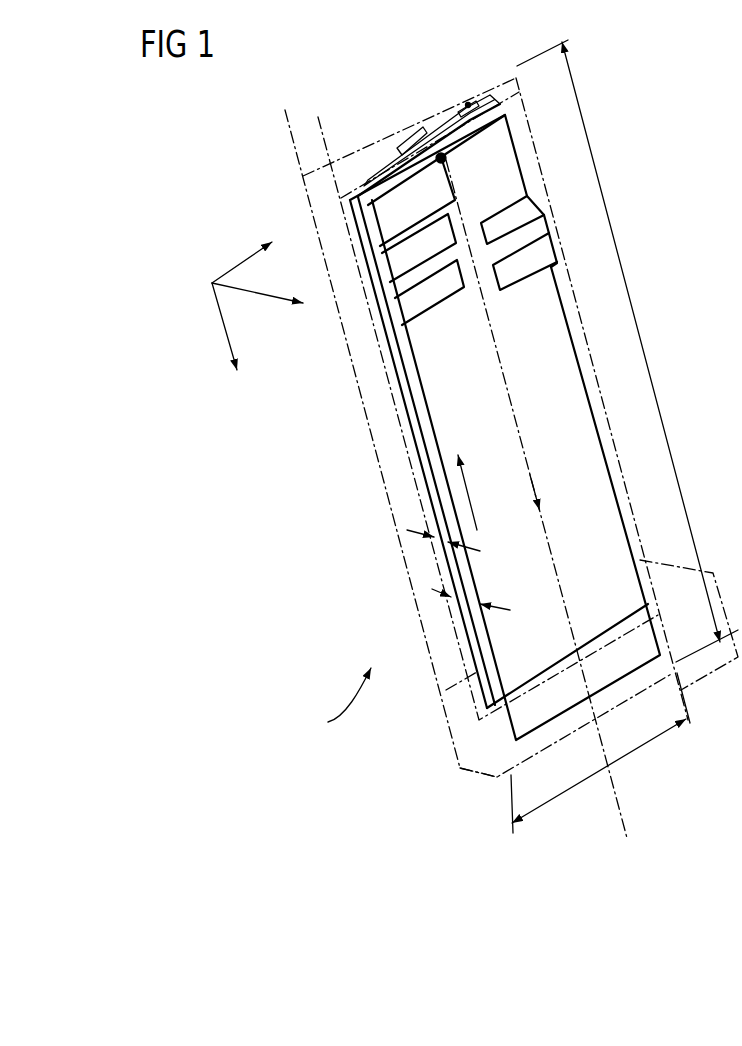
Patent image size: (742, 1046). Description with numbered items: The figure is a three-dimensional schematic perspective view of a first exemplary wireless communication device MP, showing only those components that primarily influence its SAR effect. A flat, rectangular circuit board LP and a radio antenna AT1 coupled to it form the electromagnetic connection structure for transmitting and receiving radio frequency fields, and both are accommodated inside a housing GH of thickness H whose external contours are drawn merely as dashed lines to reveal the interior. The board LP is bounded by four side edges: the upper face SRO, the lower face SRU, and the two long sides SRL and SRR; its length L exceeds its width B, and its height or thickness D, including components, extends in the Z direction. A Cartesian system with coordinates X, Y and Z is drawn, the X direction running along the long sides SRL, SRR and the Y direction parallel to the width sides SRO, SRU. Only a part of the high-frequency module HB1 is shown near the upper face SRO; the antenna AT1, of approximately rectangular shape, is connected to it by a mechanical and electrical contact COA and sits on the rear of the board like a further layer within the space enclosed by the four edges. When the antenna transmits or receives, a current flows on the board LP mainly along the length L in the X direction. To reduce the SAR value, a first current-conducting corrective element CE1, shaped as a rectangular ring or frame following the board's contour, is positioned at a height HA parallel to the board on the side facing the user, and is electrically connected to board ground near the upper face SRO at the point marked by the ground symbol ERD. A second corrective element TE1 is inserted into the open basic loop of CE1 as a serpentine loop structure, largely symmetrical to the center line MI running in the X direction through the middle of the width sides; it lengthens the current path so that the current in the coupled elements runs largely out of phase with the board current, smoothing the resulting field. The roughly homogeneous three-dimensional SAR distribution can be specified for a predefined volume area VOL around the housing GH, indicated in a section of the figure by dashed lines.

The housing thickness H is at (238, 97).
The housing GH is at (377, 137).
The high-frequency module HB1 is at (380, 128).
The ground symbol ERD is at (396, 158).
The mechanical and electrical contact COA is at (441, 153).
The transmit/receive antenna AT1 is at (470, 104).
The upper side edge SRO is at (352, 192).
The left longitudinal side edge SRL is at (418, 423).
The right longitudinal side edge SRR is at (557, 247).
The lower side edge SRU is at (512, 737).
The second corrective element TE1 is at (553, 207).
The length L is at (631, 297).
The width B is at (620, 755).
The thickness D is at (440, 548).
The height HA is at (472, 603).
The first corrective element CE1 is at (590, 383).
The circuit board LP is at (434, 476).
The center line MI is at (630, 838).
The wireless communication device MP is at (330, 708).
The volume area VOL is at (497, 780).
The X coordinate X is at (227, 343).
The Y coordinate Y is at (252, 250).
The Z coordinate Z is at (264, 305).